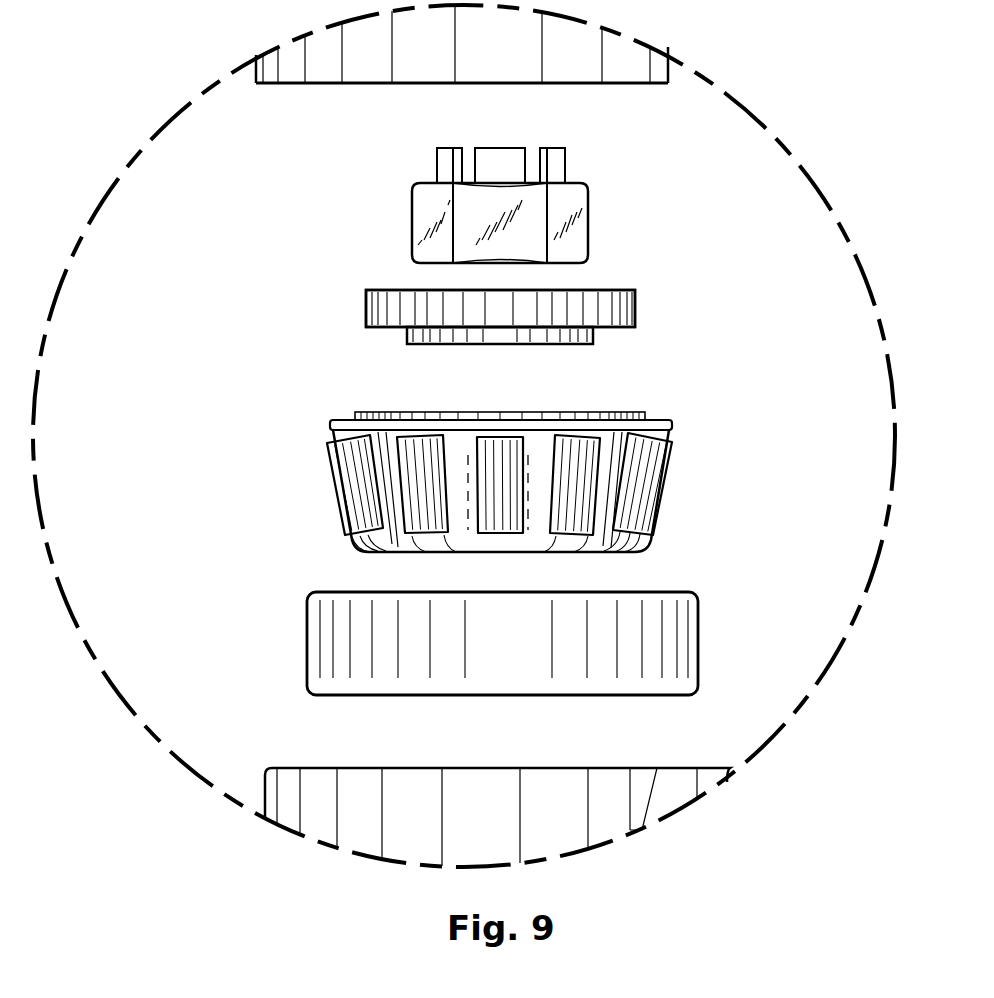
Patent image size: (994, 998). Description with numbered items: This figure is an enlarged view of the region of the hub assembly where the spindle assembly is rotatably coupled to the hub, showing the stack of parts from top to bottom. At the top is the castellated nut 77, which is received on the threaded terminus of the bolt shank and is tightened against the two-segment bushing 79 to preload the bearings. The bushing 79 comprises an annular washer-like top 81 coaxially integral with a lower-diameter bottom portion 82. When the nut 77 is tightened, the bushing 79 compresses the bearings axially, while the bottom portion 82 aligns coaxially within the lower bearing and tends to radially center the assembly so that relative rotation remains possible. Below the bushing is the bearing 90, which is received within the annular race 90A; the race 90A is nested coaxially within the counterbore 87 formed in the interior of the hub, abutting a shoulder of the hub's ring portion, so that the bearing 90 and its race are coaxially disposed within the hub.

The castellated nut 77 is at (412, 230).
The two-segment bushing 79 is at (366, 308).
The annular washer-like top 81 is at (635, 315).
The bottom portion 82 is at (555, 345).
The bearing 90 is at (338, 485).
The annular race 90A is at (307, 635).
The counterbore 87 is at (693, 790).